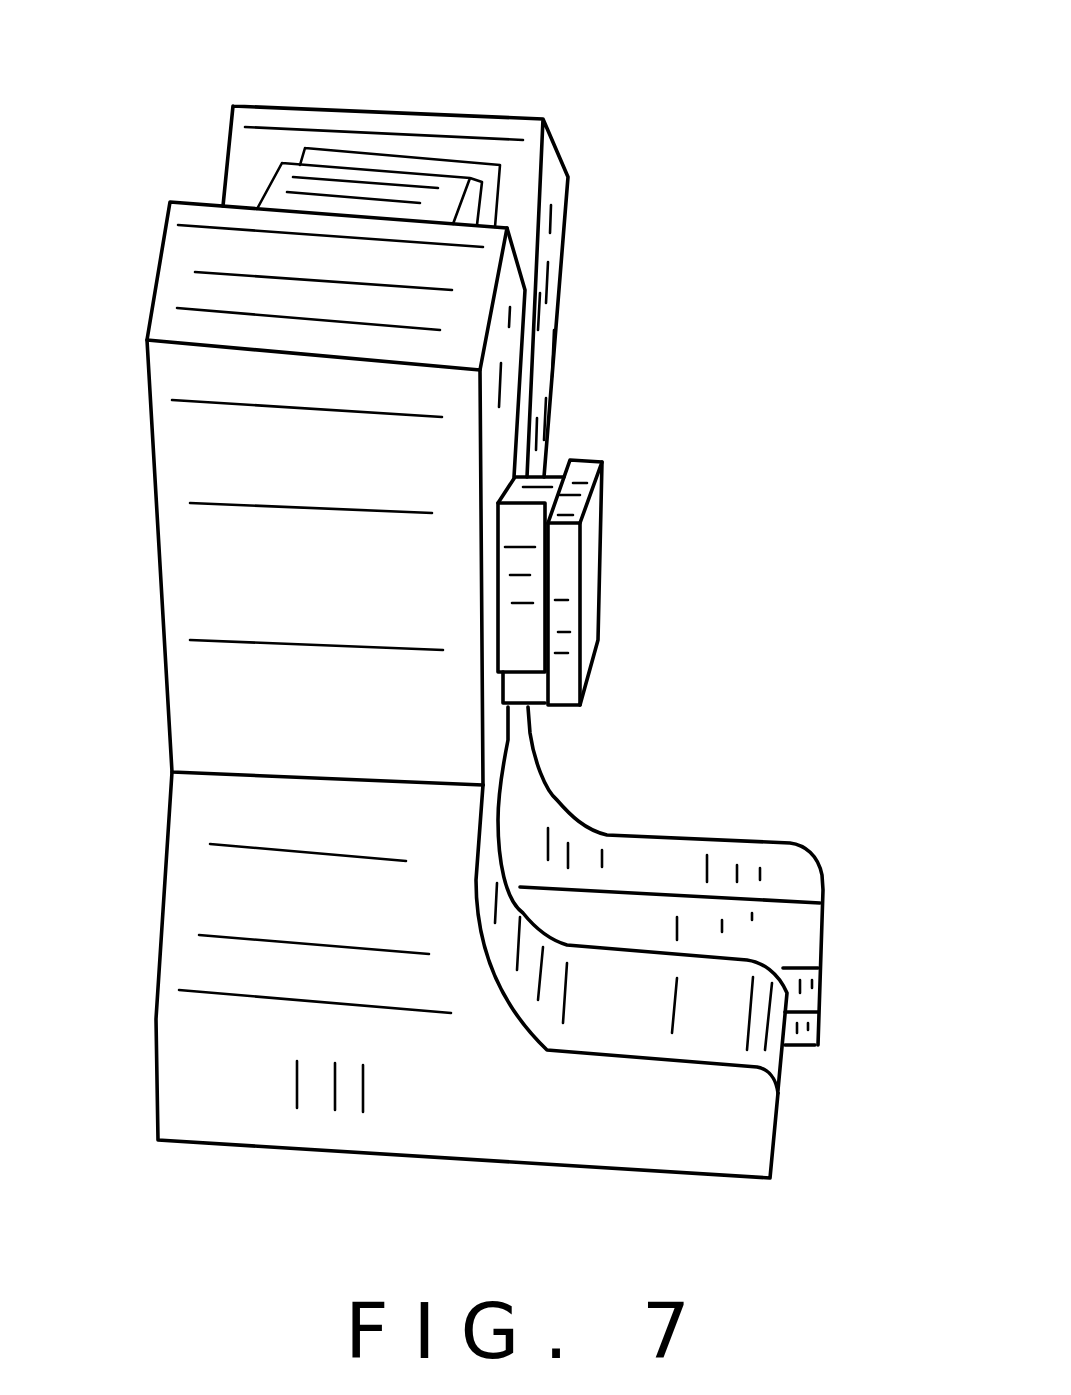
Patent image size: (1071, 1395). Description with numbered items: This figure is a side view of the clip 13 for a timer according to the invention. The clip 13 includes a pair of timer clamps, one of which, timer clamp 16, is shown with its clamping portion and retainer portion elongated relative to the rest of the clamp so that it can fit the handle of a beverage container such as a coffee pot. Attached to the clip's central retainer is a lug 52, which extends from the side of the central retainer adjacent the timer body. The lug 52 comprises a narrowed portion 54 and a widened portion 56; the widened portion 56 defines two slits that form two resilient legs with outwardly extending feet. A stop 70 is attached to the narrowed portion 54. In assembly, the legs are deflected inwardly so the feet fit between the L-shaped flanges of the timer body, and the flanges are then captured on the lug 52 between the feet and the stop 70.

The clip 13 is at (492, 82).
The timer clamp 16 is at (153, 280).
The lug 52 is at (607, 540).
The narrowed portion 54 is at (522, 522).
The widened portion 56 is at (570, 550).
The stop 70 is at (530, 737).